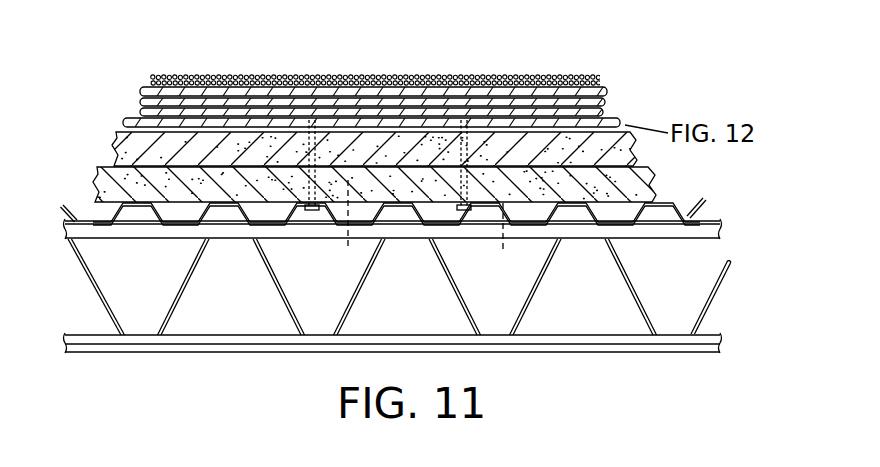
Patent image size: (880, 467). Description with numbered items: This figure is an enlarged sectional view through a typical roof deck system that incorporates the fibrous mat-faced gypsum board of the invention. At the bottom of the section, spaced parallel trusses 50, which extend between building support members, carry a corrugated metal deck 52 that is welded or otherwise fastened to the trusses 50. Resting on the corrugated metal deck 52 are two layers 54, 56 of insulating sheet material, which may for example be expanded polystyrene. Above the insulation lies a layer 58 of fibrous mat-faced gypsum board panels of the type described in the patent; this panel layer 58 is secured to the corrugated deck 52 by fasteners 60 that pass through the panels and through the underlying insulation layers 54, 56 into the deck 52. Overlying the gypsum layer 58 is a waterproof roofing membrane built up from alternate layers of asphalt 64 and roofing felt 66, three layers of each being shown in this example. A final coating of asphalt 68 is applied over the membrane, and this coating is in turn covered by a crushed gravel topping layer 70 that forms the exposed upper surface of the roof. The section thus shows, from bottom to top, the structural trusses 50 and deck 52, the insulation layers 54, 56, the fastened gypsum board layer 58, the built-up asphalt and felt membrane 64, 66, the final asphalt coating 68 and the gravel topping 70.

The trusses 50 is at (530, 310).
The corrugated metal deck 52 is at (205, 206).
The layer of insulating sheet material 54 is at (652, 180).
The layer of insulating sheet material 56 is at (637, 152).
The layer of fibrous mat-faced gypsum board panels 58 is at (622, 120).
The fasteners 60 is at (413, 199).
The layers of asphalt 64 is at (606, 110).
The layers of roofing felt 66 is at (140, 111).
The final coating of asphalt 68 is at (595, 85).
The crushed gravel topping layer 70 is at (357, 73).